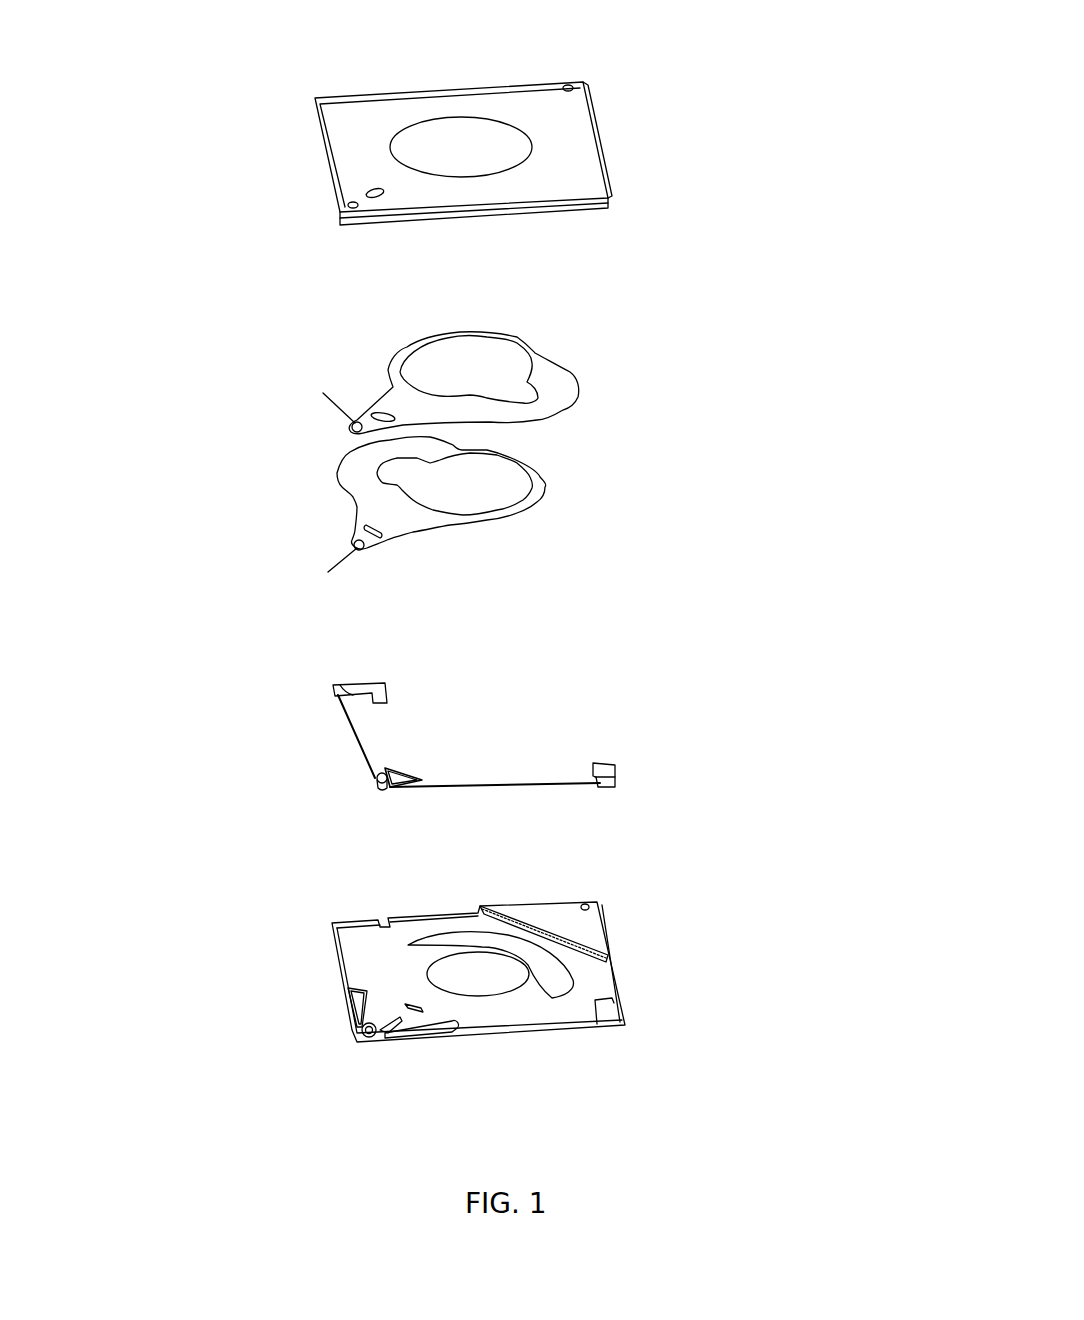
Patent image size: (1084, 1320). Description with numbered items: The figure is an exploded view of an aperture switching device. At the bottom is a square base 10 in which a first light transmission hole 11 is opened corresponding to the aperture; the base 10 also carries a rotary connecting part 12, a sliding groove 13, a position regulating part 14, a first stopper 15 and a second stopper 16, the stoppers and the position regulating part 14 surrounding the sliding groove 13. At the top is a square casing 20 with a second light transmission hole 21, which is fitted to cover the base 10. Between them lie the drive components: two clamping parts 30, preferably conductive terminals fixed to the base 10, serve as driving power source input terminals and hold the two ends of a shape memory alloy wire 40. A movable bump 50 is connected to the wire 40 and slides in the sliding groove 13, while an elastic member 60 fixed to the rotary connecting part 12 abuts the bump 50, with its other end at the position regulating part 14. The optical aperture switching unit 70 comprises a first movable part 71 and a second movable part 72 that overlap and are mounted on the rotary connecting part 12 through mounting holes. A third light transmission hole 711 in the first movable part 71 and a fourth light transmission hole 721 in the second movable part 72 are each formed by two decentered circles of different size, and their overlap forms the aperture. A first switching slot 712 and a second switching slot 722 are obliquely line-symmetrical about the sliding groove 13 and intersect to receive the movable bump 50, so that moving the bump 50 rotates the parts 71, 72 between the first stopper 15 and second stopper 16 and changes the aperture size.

The base 10 is at (472, 973).
The first light transmission hole 11 is at (466, 975).
The rotary connecting part 12 is at (362, 1033).
The sliding groove 13 is at (398, 1030).
The position regulating part 14 is at (447, 1033).
The first stopper 15 is at (352, 997).
The second stopper 16 is at (405, 1028).
The casing 20 is at (497, 126).
The second light transmission hole 21 is at (475, 137).
The clamping parts 30 is at (358, 685).
The shape memory alloy wire 40 is at (470, 787).
The movable bump 50 is at (375, 775).
The elastic member 60 is at (408, 775).
The optical aperture switching unit 70 is at (514, 443).
The first movable part 71 is at (443, 358).
The third light transmission hole 711 is at (493, 360).
The first switching slot 712 is at (378, 413).
The second movable part 72 is at (483, 516).
The fourth light transmission hole 721 is at (497, 482).
The second switching slot 722 is at (377, 535).